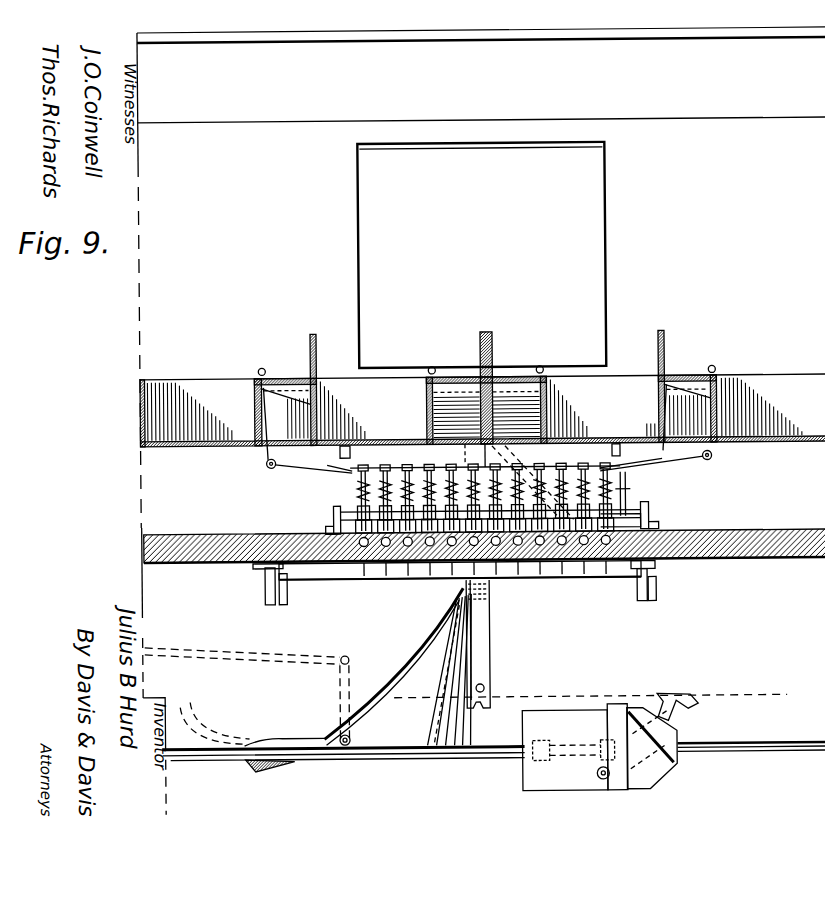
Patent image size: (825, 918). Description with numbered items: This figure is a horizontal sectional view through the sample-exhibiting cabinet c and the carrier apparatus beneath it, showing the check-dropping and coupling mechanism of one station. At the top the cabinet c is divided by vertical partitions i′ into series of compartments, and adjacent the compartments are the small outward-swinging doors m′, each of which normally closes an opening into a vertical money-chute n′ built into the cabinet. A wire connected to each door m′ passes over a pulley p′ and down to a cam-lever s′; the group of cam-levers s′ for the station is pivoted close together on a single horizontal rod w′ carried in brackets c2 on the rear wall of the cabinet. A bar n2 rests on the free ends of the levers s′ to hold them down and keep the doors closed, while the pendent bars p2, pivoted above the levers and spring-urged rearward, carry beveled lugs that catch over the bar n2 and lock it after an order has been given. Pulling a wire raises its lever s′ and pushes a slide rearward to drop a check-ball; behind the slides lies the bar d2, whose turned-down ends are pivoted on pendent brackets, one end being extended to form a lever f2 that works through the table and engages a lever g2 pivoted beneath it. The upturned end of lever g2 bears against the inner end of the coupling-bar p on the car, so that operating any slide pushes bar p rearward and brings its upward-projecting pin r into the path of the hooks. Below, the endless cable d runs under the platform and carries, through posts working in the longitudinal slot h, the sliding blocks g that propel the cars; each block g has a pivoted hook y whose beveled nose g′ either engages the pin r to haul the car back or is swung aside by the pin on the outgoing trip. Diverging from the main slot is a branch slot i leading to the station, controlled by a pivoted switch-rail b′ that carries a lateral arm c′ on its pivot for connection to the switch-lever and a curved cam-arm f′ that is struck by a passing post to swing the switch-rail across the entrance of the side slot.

The sample-exhibiting cabinet c is at (201, 379).
The outward-swinging door m′ is at (278, 377).
The vertical partition i′ is at (315, 333).
The money-chute n′ is at (300, 401).
The bar n2 is at (420, 458).
The pendent bar p2 is at (372, 448).
The cam-lever s′ is at (350, 496).
The bracket c2 is at (332, 517).
The horizontal rod w′ is at (632, 512).
The pulley p′ is at (718, 457).
The bar d2 is at (325, 580).
The lever g2 is at (620, 577).
The lever f2 is at (634, 594).
The coupling-bar p is at (487, 621).
The upward-projecting pin r is at (483, 687).
The branch slot i is at (403, 680).
The lateral arm c′ is at (392, 664).
The switch-rail b′ is at (293, 745).
The curved cam-arm f′ is at (214, 727).
The block g is at (569, 776).
The beveled nose of hook g′ is at (676, 699).
The hook y is at (690, 711).
The longitudinal slot h is at (760, 752).
The endless cable d is at (815, 755).